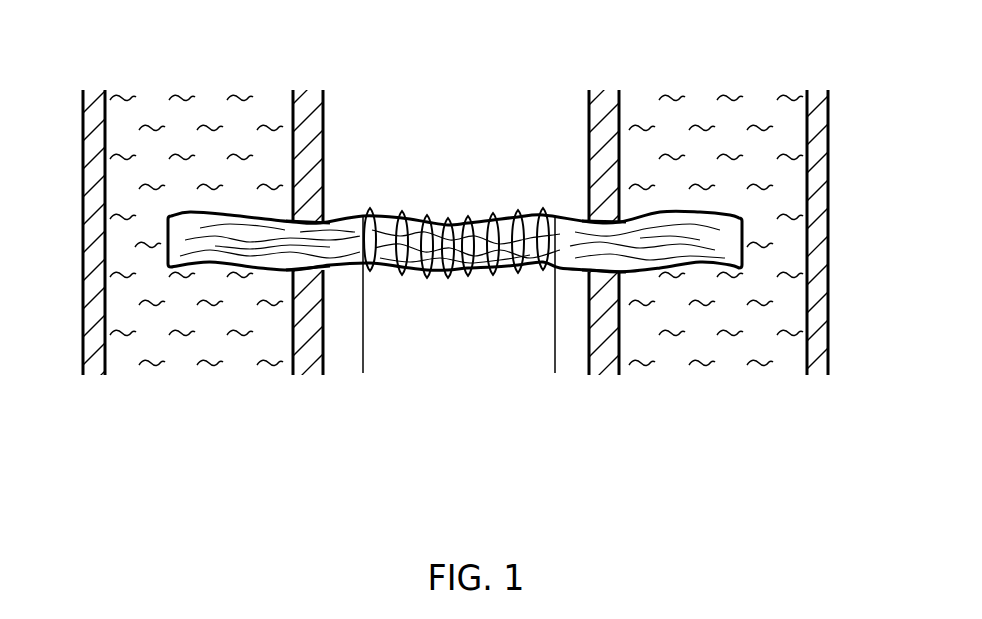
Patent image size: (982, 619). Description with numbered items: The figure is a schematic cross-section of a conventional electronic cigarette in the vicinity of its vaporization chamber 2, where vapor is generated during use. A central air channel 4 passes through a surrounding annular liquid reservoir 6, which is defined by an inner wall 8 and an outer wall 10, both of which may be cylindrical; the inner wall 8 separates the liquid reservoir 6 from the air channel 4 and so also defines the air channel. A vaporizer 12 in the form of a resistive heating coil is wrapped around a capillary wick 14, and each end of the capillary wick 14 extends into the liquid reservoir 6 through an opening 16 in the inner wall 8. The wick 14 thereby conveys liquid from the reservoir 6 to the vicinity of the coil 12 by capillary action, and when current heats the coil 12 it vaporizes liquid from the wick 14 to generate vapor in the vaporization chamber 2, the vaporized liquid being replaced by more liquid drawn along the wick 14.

The vaporization chamber 2 is at (462, 191).
The central air channel 4 is at (597, 415).
The annular liquid reservoir 6 is at (305, 415).
The inner wall 8 is at (323, 122).
The outer wall 10 is at (83, 110).
The vaporizer 12 is at (397, 216).
The capillary wick 14 is at (383, 263).
The opening 16 is at (327, 219).